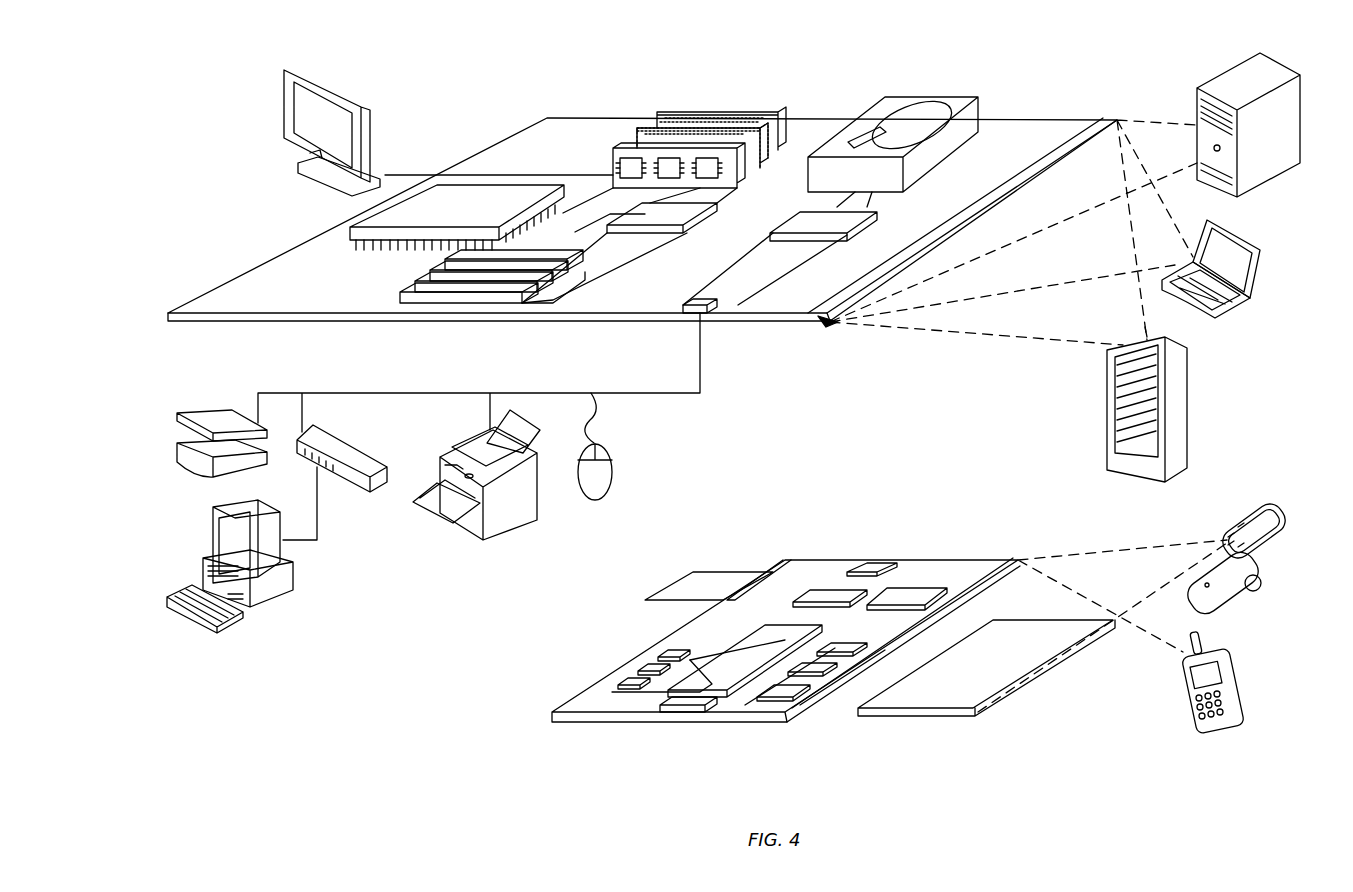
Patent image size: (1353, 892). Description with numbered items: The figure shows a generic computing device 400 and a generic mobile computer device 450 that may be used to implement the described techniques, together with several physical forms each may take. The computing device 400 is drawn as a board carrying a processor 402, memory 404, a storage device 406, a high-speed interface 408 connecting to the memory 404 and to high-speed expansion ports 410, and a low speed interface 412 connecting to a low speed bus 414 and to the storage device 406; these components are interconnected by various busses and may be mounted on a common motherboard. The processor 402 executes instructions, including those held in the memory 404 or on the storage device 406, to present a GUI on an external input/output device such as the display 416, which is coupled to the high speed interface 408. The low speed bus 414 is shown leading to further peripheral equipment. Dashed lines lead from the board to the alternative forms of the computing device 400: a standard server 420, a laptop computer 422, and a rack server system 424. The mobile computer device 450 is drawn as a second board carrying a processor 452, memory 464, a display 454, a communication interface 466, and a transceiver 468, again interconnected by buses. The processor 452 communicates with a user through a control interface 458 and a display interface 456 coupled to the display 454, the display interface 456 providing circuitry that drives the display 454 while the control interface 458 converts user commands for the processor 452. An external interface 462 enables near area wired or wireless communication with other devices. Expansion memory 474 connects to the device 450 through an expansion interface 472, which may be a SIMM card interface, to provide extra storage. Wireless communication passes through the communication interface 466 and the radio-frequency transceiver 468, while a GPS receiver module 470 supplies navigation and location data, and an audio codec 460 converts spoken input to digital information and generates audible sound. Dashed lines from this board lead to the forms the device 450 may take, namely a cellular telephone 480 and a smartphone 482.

The computing device 400 is at (478, 90).
The processor 402 is at (350, 232).
The memory 404 is at (663, 135).
The storage device 406 is at (886, 108).
The high-speed interface 408 is at (642, 222).
The high-speed expansion ports 410 is at (420, 288).
The low speed interface 412 is at (803, 217).
The low speed bus 414 is at (712, 316).
The display 416 is at (285, 72).
The standard server 420 is at (1198, 104).
The laptop computer 422 is at (1260, 253).
The rack server system 424 is at (1108, 432).
The mobile computer device 450 is at (520, 724).
The processor 452 is at (718, 682).
The display 454 is at (947, 693).
The display interface 456 is at (795, 688).
The control interface 458 is at (833, 667).
The audio codec 460 is at (857, 657).
The external interface 462 is at (685, 720).
The memory 464 is at (640, 676).
The communication interface 466 is at (833, 597).
The transceiver 468 is at (912, 598).
The GPS receiver module 470 is at (876, 565).
The expansion interface 472 is at (763, 570).
The expansion memory 474 is at (695, 572).
The cellular telephone 480 is at (1240, 527).
The smartphone 482 is at (1187, 687).